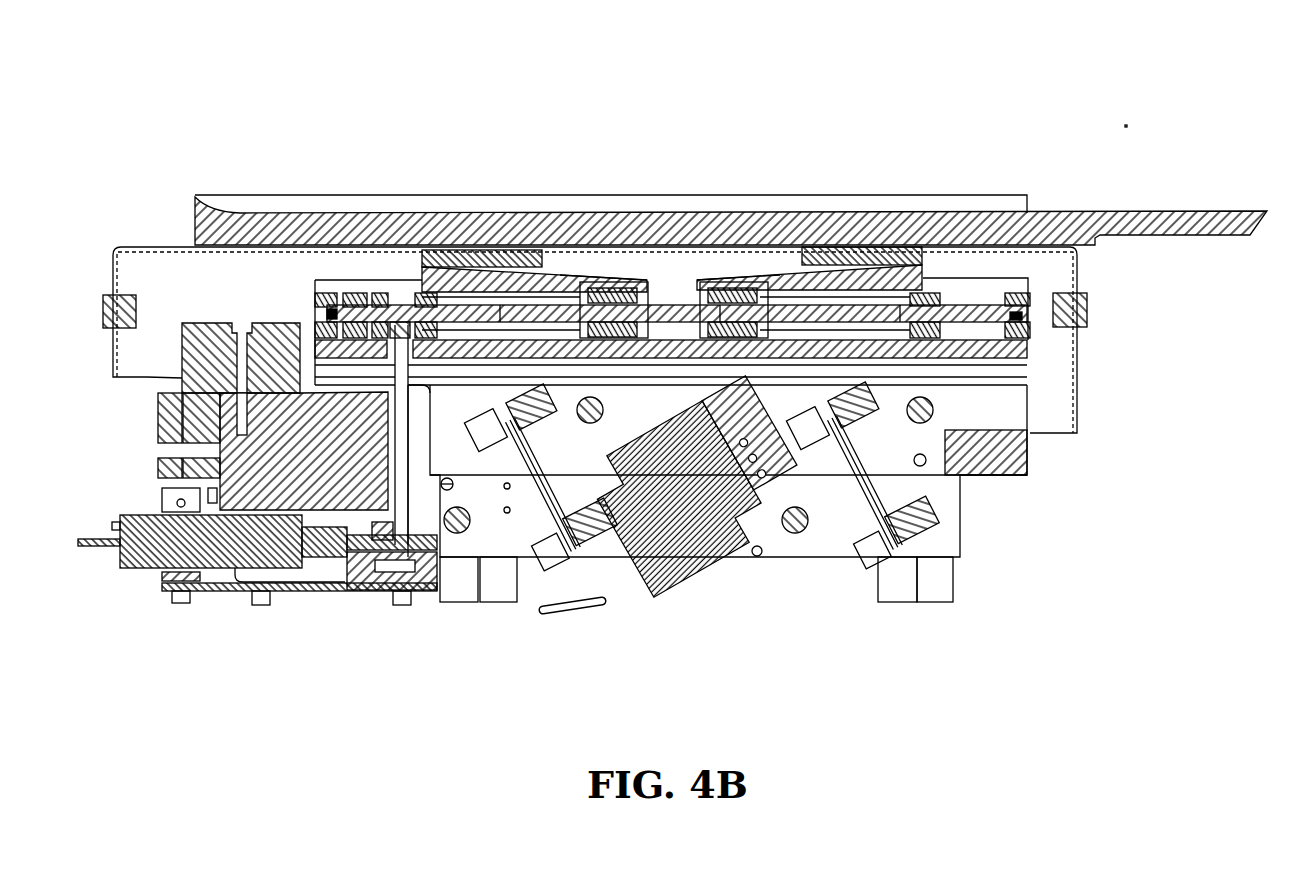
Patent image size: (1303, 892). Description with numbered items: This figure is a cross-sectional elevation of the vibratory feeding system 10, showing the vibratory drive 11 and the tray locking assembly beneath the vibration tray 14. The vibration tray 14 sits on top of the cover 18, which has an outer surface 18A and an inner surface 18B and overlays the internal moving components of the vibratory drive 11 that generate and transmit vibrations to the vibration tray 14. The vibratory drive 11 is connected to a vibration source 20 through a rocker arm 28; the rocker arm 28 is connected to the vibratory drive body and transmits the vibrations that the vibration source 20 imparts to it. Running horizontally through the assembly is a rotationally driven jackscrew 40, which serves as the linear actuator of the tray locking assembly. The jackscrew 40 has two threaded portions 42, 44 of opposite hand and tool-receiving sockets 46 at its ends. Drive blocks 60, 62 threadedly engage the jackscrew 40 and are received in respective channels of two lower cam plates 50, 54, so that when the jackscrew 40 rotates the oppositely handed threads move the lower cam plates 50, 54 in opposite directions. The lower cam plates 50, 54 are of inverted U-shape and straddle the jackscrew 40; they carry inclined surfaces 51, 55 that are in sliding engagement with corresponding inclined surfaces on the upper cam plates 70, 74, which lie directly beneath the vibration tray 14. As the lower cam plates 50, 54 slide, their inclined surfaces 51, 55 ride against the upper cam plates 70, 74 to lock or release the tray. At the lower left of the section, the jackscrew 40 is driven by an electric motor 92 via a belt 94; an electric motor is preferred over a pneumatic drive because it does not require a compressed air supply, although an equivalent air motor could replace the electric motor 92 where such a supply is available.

The vibratory feeding system 10 is at (1131, 131).
The vibratory drive 11 is at (1031, 350).
The vibration tray 14 is at (212, 224).
The cover 18 is at (1081, 370).
The outer surface 18A is at (1079, 258).
The inner surface 18B is at (147, 353).
The vibration source 20 is at (725, 548).
The rocker arm 28 is at (532, 501).
The jackscrew 40 is at (672, 304).
The threaded portion 42 is at (467, 298).
The threaded portion 44 is at (880, 298).
The tool-receiving sockets 46 is at (320, 310).
The lower cam plate 50 is at (530, 282).
The inclined surface 51 is at (633, 277).
The lower cam plate 54 is at (812, 280).
The inclined surface 55 is at (712, 280).
The drive block 60 is at (620, 290).
The drive block 62 is at (740, 296).
The upper cam plate 70 is at (495, 257).
The upper cam plate 74 is at (850, 255).
The electric motor 92 is at (147, 565).
The belt 94 is at (395, 457).